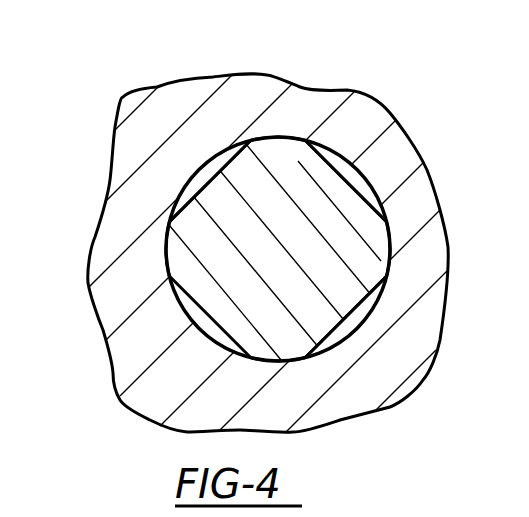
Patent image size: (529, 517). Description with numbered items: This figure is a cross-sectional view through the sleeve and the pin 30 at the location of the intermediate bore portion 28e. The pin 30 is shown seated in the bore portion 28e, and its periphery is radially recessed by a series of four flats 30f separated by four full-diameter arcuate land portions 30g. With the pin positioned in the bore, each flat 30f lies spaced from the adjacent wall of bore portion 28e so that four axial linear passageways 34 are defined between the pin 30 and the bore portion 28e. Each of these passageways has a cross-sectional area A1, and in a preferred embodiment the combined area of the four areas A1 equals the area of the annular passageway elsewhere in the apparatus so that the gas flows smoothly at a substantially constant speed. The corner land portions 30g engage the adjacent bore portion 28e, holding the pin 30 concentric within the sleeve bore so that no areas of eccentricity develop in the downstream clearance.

The axial linear passageway 34 is at (196, 158).
The pin 30 is at (208, 290).
The flat 30f is at (357, 173).
The arcuate land portion 30g is at (166, 236).
The intermediate bore portion 28e is at (365, 320).
The passageway area A1 is at (368, 312).